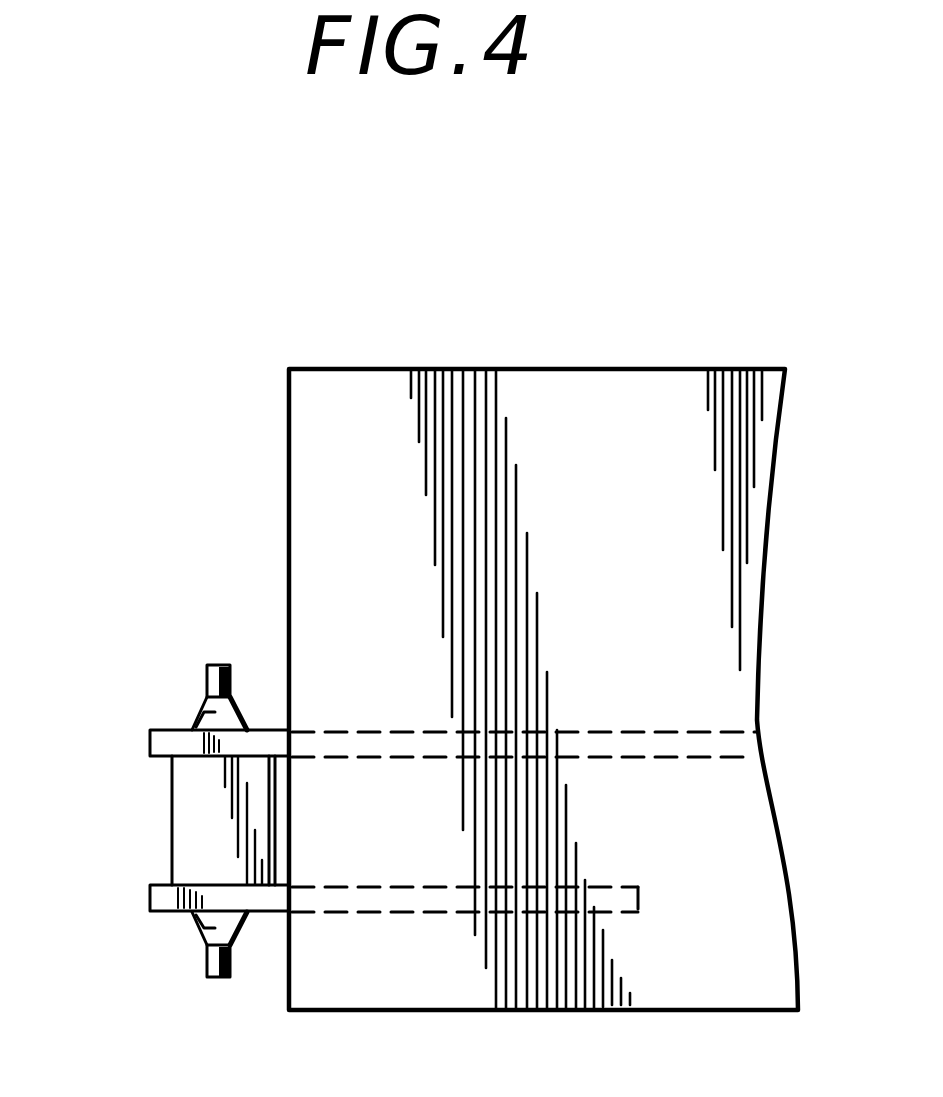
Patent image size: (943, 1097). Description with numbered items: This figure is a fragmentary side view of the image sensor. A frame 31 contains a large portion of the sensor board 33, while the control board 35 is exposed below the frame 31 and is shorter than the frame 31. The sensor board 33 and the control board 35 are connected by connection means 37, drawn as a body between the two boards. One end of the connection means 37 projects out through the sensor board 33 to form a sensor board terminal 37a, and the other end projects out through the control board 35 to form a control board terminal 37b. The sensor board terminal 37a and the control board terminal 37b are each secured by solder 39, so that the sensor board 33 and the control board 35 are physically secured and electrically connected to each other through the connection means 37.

The frame 31 is at (393, 393).
The sensor board 33 is at (173, 742).
The control board 35 is at (168, 897).
The connection means 37 is at (188, 830).
The sensor board terminal 37a is at (226, 665).
The control board terminal 37b is at (215, 979).
The solder 39 is at (213, 715).